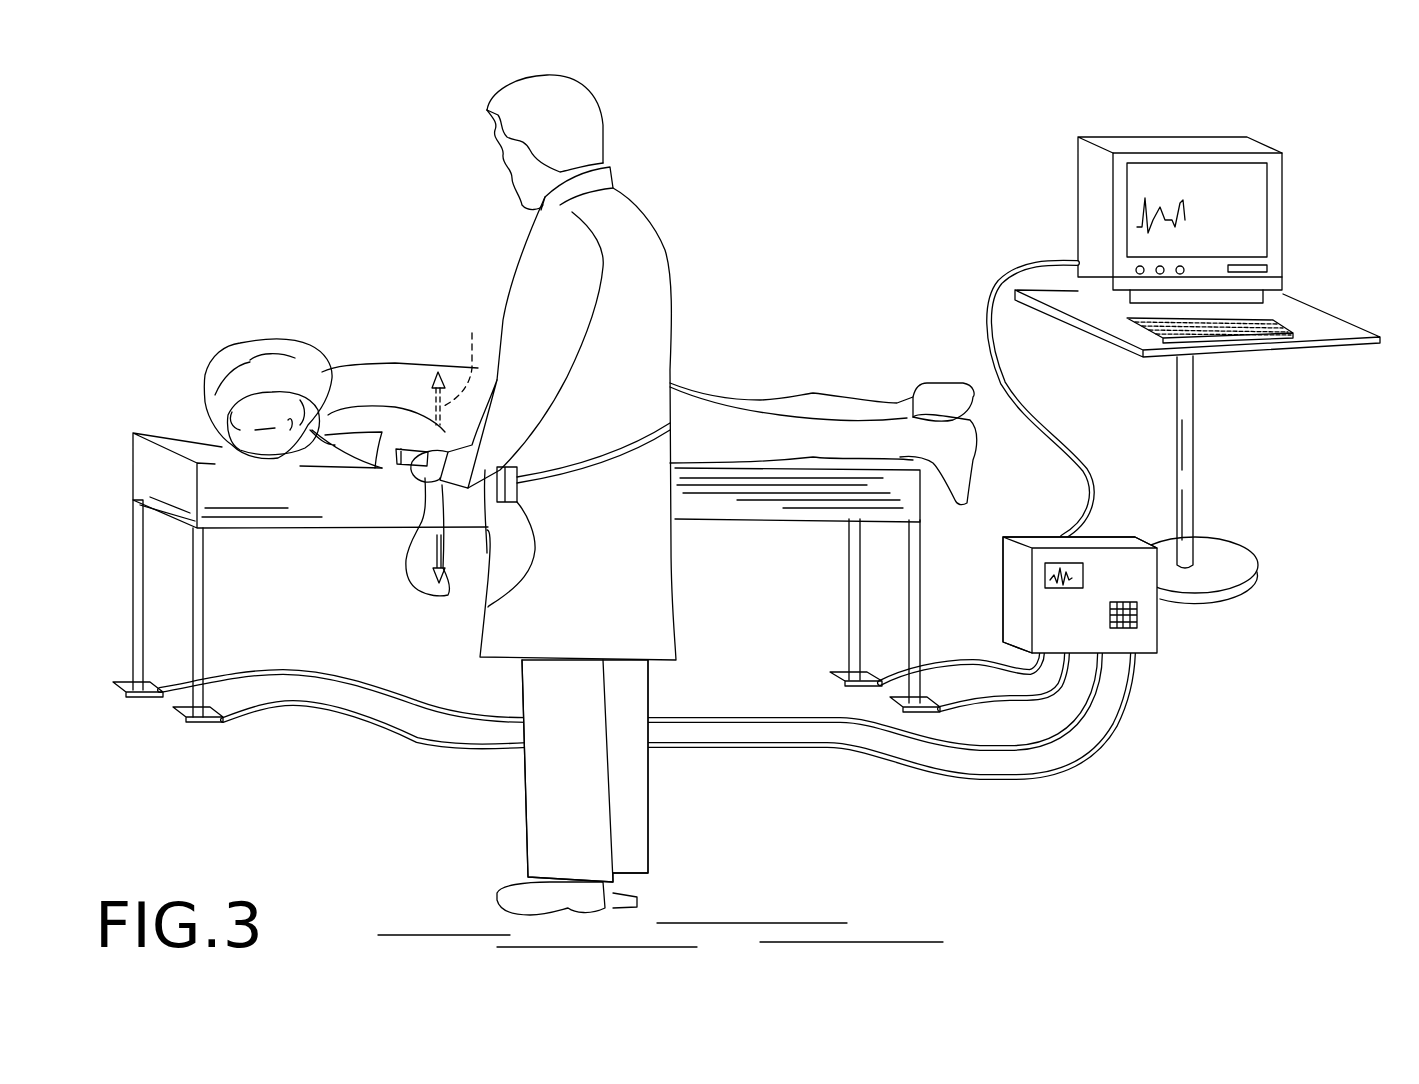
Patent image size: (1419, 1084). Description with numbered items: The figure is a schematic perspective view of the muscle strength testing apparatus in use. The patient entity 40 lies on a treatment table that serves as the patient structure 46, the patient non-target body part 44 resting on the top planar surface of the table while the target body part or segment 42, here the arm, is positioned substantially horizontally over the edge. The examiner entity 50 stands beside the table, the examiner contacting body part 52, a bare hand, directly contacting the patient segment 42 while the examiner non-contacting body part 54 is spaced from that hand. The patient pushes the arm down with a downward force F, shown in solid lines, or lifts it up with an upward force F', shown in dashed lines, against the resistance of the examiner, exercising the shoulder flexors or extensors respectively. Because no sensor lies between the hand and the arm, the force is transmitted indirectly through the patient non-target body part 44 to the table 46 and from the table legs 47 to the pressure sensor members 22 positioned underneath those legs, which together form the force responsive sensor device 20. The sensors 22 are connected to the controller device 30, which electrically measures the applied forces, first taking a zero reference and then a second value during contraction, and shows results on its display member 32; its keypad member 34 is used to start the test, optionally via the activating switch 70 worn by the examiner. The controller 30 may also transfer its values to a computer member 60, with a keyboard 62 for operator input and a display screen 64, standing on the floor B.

The force responsive sensor device 20 is at (553, 639).
The pressure sensor member 22 is at (180, 712).
The controller device 30 is at (1116, 612).
The display member 32 is at (1078, 563).
The keypad member 34 is at (1138, 623).
The patient entity 40 is at (590, 406).
The target body part or segment 42 is at (408, 472).
The patient non-target body part 44 is at (337, 367).
The patient structure 46 is at (760, 518).
The table legs 47 is at (913, 635).
The examiner entity 50 is at (588, 495).
The examiner contacting body part 52 is at (428, 495).
The examiner non-contacting body part 54 is at (650, 223).
The computer member 60 is at (1197, 367).
The keyboard 62 is at (1273, 323).
The display screen 64 is at (1267, 190).
The activating switch 70 is at (520, 598).
The floor B is at (351, 846).
The downward force F is at (399, 592).
The upward force F' is at (455, 370).